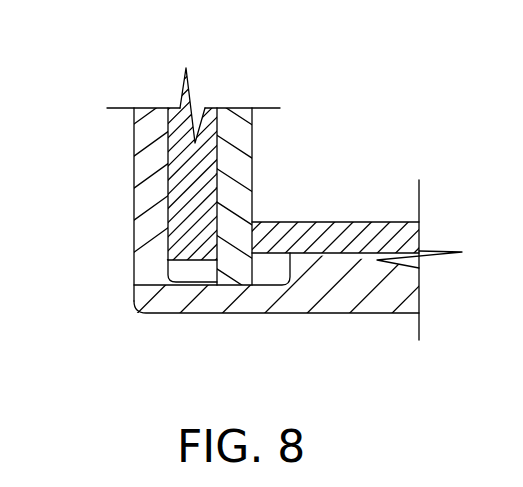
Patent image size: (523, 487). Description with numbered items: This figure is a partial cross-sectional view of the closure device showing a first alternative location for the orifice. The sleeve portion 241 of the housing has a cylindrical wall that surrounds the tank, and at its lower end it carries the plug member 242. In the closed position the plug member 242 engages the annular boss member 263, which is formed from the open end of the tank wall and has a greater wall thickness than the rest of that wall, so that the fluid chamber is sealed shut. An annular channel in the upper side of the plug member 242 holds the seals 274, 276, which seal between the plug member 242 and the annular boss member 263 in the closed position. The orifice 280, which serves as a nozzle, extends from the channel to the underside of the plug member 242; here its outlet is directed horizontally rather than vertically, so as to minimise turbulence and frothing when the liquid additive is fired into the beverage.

The sleeve portion 241 is at (148, 186).
The seal 276 is at (197, 138).
The annular boss member 263 is at (238, 148).
The seal 274 is at (395, 197).
The orifice 280 is at (202, 270).
The plug member 242 is at (351, 300).